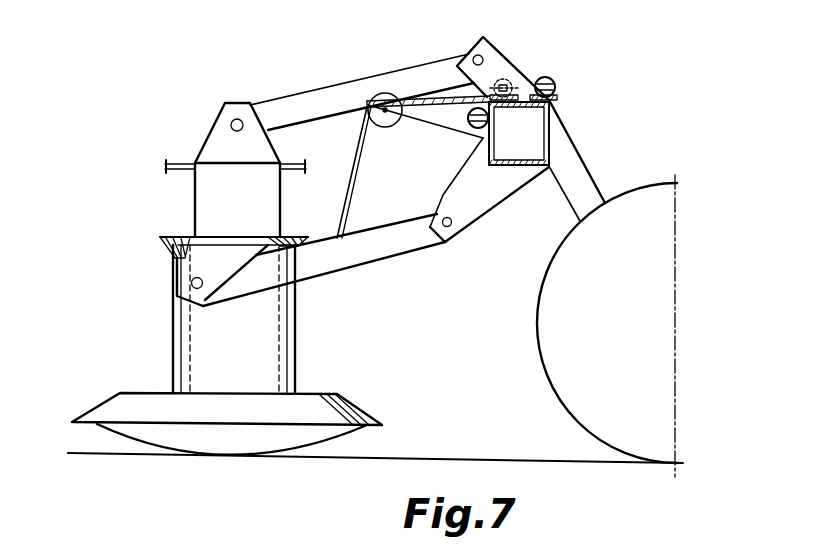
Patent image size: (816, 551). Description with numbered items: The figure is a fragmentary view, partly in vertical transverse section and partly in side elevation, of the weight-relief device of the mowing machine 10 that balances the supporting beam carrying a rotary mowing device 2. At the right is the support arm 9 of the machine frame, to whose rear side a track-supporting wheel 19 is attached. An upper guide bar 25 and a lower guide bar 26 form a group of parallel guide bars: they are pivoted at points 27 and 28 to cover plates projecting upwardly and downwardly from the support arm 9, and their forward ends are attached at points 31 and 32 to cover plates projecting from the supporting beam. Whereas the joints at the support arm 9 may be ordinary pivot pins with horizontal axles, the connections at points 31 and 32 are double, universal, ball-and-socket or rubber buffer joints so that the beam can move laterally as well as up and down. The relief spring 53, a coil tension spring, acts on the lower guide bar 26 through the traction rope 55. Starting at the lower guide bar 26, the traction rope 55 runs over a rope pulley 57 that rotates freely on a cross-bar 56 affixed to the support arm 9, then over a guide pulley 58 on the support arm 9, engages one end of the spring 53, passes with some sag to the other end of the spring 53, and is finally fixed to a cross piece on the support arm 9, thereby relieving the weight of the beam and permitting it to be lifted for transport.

The mowing apparatus 10 is at (209, 8).
The mowing device 2 is at (350, 407).
The support arm 9 is at (552, 137).
The track-supporting wheel 19 is at (575, 388).
The upper guide bar 25 is at (302, 103).
The lower guide bar 26 is at (387, 240).
The pivot point 27 is at (484, 58).
The pivot point 28 is at (453, 228).
The attachment point 31 is at (233, 122).
The attachment point 32 is at (170, 265).
The relief spring 53 is at (551, 82).
The traction rope 55 is at (345, 202).
The cross-bar 56 is at (437, 125).
The rope pulley 57 is at (392, 127).
The guide pulley 58 is at (558, 99).